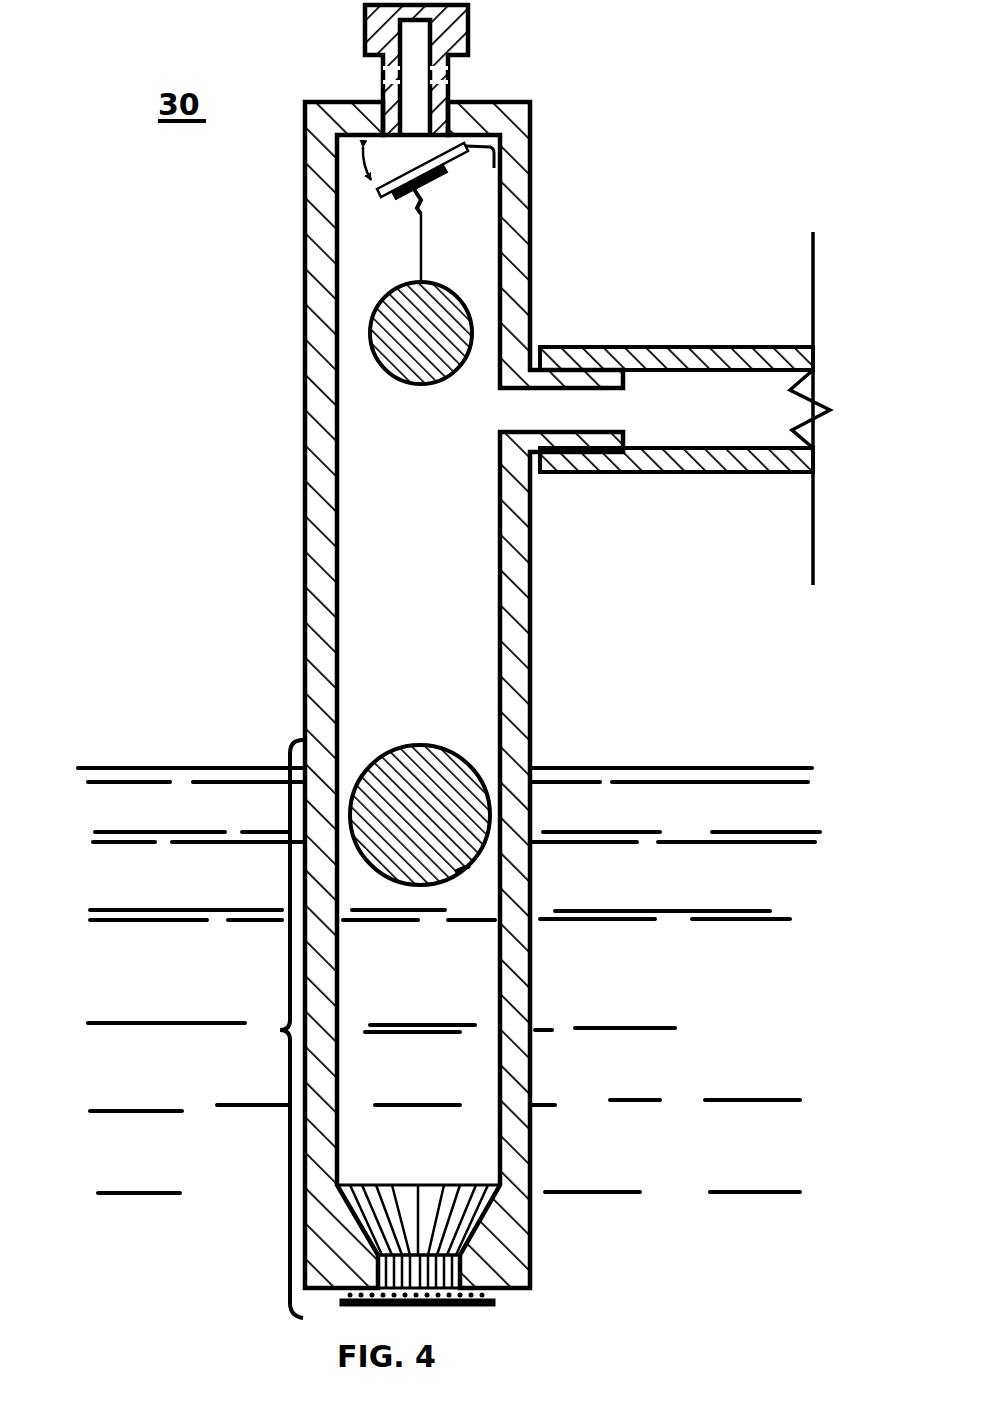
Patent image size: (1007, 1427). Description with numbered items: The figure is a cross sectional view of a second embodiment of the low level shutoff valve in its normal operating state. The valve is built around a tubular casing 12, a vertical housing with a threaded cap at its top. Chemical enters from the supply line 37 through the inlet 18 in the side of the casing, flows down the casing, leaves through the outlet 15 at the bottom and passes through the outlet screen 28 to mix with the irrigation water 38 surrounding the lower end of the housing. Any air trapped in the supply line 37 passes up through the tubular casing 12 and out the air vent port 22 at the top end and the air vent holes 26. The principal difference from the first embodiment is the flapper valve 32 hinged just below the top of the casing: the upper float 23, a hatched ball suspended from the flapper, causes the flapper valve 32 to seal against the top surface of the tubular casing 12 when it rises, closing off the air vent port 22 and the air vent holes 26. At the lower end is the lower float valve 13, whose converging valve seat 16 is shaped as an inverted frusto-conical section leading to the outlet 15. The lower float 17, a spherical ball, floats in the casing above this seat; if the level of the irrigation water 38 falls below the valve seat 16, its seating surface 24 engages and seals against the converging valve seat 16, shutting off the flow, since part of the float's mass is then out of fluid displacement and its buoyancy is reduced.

The tubular casing 12 is at (530, 668).
The lower float valve 13 is at (274, 1029).
The outlet 15 is at (433, 1240).
The converging valve seat 16 is at (383, 1196).
The lower float 17 is at (412, 763).
The inlet 18 is at (572, 426).
The air vent port 22 is at (408, 96).
The upper float 23 is at (421, 385).
The seating surface 24 is at (456, 873).
The air vent holes 26 is at (382, 71).
The outlet screen 28 is at (495, 1303).
The flapper valve 32 is at (376, 198).
The supply line 37 is at (650, 347).
The irrigation water 38 is at (716, 768).